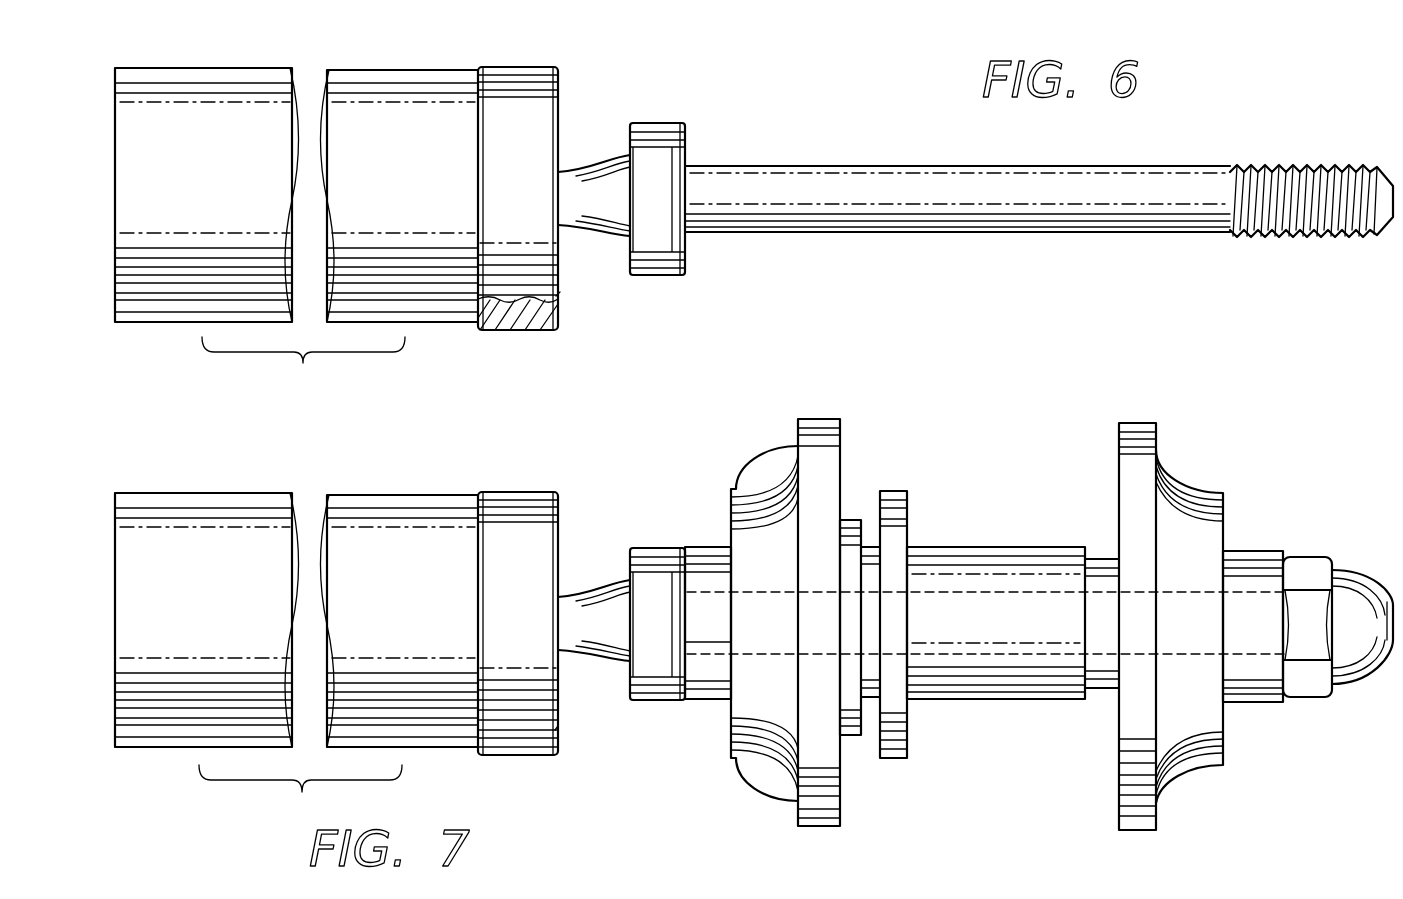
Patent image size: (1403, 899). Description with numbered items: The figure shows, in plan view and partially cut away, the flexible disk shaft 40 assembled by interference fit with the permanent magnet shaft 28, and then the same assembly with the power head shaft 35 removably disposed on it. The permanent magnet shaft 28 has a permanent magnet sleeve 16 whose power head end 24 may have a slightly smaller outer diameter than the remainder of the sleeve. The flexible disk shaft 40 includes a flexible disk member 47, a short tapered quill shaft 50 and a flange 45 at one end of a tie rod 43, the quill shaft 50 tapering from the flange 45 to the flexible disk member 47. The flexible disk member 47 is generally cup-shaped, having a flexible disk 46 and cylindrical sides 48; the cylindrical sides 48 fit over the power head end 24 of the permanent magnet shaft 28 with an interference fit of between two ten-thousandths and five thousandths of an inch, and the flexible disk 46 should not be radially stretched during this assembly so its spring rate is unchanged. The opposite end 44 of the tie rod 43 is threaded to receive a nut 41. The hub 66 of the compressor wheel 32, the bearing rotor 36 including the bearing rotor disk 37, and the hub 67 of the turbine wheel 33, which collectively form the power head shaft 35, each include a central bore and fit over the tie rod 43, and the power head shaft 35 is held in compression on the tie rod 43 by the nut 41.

In FIG. 6, the permanent magnet sleeve 16 is at (372, 70).
In FIG. 7, the permanent magnet sleeve 16 is at (372, 494).
In FIG. 6, the power head end 24 is at (507, 331).
In FIG. 6, the permanent magnet shaft 28 is at (237, 69).
In FIG. 7, the permanent magnet shaft 28 is at (233, 493).
In FIG. 7, the compressor wheel 32 is at (845, 462).
In FIG. 7, the turbine wheel 33 is at (1226, 518).
In FIG. 7, the power head shaft 35 is at (1039, 595).
In FIG. 7, the bearing rotor 36 is at (938, 704).
In FIG. 7, the bearing rotor disk 37 is at (909, 507).
In FIG. 6, the flexible disk shaft 40 is at (1039, 214).
In FIG. 7, the nut 41 is at (1302, 556).
In FIG. 6, the tie rod 43 is at (857, 233).
In FIG. 7, the tie rod 43 is at (999, 591).
In FIG. 6, the opposite end 44 is at (1313, 236).
In FIG. 6, the flange 45 is at (663, 122).
In FIG. 7, the flange 45 is at (645, 547).
In FIG. 6, the flexible disk 46 is at (560, 292).
In FIG. 7, the flexible disk 46 is at (558, 726).
In FIG. 6, the flexible disk member 47 is at (647, 172).
In FIG. 7, the flexible disk member 47 is at (638, 604).
In FIG. 6, the cylindrical sides 48 is at (525, 66).
In FIG. 7, the cylindrical sides 48 is at (522, 490).
In FIG. 6, the quill shaft 50 is at (603, 234).
In FIG. 7, the quill shaft 50 is at (601, 660).
In FIG. 7, the hub 66 is at (703, 702).
In FIG. 7, the hub 67 is at (1254, 704).